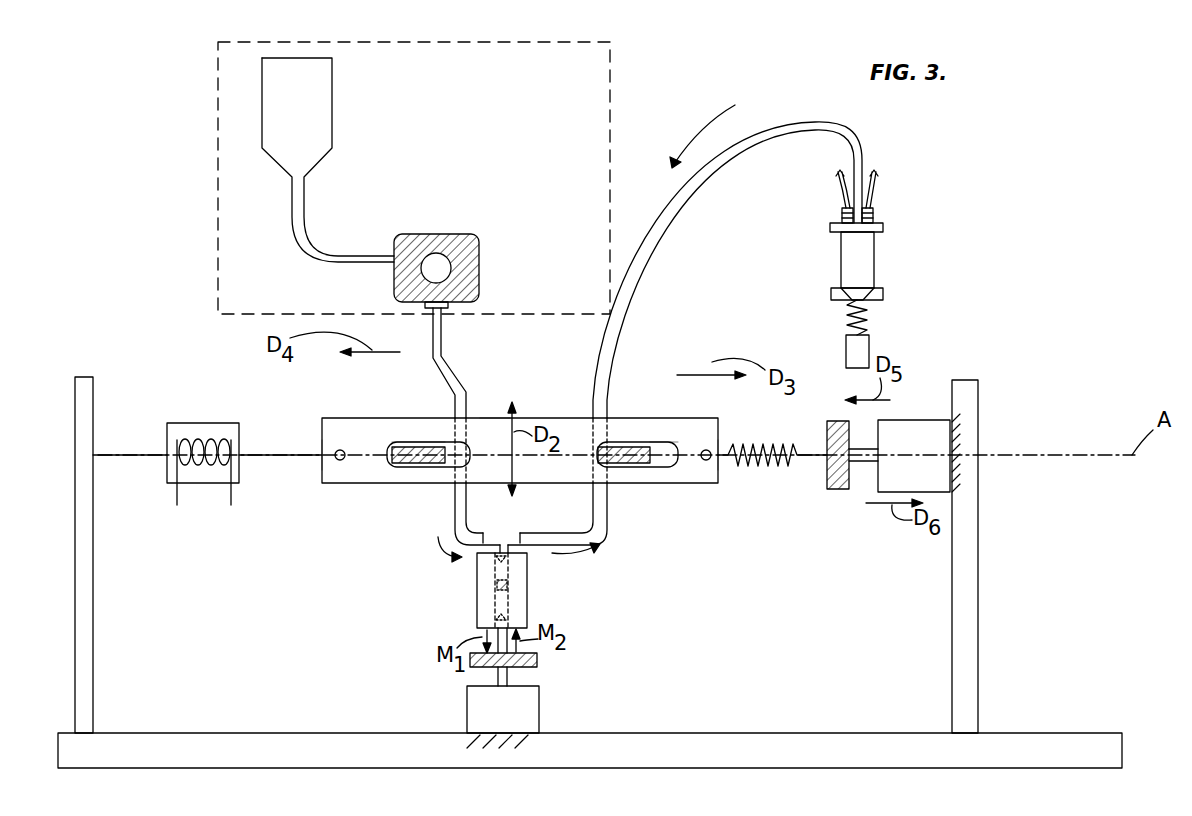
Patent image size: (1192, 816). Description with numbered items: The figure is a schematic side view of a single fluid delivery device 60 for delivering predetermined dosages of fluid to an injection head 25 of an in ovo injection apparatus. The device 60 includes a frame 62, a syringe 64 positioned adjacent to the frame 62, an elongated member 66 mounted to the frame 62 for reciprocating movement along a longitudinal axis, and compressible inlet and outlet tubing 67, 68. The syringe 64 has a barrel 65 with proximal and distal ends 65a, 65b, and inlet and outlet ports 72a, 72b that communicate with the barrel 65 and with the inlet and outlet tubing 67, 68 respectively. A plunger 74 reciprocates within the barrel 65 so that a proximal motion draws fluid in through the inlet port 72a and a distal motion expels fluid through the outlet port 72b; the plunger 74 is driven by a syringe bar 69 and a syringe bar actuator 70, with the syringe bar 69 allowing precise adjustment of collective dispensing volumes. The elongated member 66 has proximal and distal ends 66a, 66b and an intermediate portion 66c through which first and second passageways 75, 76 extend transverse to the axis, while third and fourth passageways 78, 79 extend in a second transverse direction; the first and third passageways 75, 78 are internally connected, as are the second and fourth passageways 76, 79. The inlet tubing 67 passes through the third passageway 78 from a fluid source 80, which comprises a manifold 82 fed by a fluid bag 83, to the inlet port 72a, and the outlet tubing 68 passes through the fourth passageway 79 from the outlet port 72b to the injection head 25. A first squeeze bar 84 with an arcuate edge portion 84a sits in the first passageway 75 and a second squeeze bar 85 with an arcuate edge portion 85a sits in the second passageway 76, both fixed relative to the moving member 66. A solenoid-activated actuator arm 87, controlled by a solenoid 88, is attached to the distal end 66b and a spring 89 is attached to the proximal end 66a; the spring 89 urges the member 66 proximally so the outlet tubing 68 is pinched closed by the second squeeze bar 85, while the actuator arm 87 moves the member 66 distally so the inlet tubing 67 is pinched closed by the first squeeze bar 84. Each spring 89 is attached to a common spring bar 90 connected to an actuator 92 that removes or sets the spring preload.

The injection head 25 is at (874, 265).
The fluid delivery device 60 is at (715, 125).
The frame 62 is at (93, 400).
The syringe 64 is at (477, 595).
The barrel 65 is at (492, 580).
The proximal end 65a is at (477, 615).
The distal end 65b is at (507, 558).
The elongated member 66 is at (702, 418).
The proximal end 66a is at (719, 445).
The distal end 66b is at (333, 433).
The intermediate portion 66c is at (492, 418).
The compressible inlet tubing 67 is at (447, 366).
The compressible outlet tubing 68 is at (621, 321).
The syringe bar 69 is at (540, 660).
The syringe bar actuator 70 is at (525, 710).
The inlet port 72a is at (491, 533).
The outlet port 72b is at (520, 533).
The plunger 74 is at (510, 598).
The first passageway 75 is at (432, 446).
The second passageway 76 is at (656, 445).
The third passageway 78 is at (455, 420).
The fourth passageway 79 is at (610, 420).
The fluid source 80 is at (615, 63).
The manifold 82 is at (447, 232).
The fluid bag 83 is at (313, 100).
The first squeeze bar 84 is at (406, 467).
The arcuate edge portion 84a is at (446, 467).
The second squeeze bar 85 is at (636, 462).
The arcuate edge portion 85a is at (597, 470).
The actuator arm 87 is at (280, 458).
The solenoid 88 is at (240, 472).
The spring 89 is at (750, 462).
The common spring bar 90 is at (835, 490).
The actuator 92 is at (898, 430).